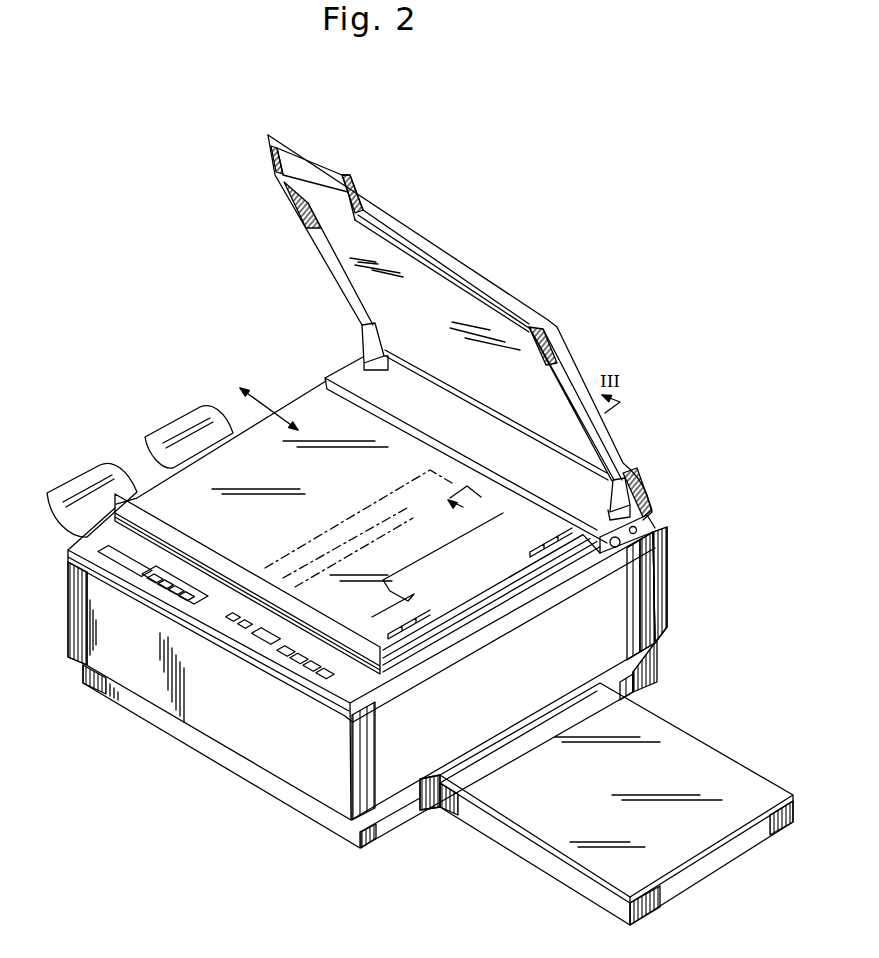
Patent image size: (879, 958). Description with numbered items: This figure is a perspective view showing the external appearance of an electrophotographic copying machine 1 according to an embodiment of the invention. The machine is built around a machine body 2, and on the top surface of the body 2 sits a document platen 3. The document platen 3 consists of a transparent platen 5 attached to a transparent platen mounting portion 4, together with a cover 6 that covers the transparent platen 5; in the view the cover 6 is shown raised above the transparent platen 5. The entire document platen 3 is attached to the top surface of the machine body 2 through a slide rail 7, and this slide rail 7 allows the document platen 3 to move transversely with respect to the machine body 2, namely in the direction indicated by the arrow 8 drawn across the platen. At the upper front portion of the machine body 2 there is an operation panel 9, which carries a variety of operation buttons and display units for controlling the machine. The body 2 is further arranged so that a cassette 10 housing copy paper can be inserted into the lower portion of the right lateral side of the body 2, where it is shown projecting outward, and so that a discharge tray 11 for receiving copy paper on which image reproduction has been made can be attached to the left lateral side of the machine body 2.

The electrophotographic copying machine 1 is at (342, 857).
The machine body 2 is at (650, 623).
The document platen 3 is at (297, 400).
The transparent platen mounting portion 4 is at (345, 372).
The transparent platen 5 is at (535, 592).
The cover 6 is at (425, 252).
The slide rail 7 is at (653, 517).
The arrow 8 is at (256, 398).
The operation panel 9 is at (303, 673).
The cassette 10 is at (555, 877).
The discharge tray 11 is at (62, 490).